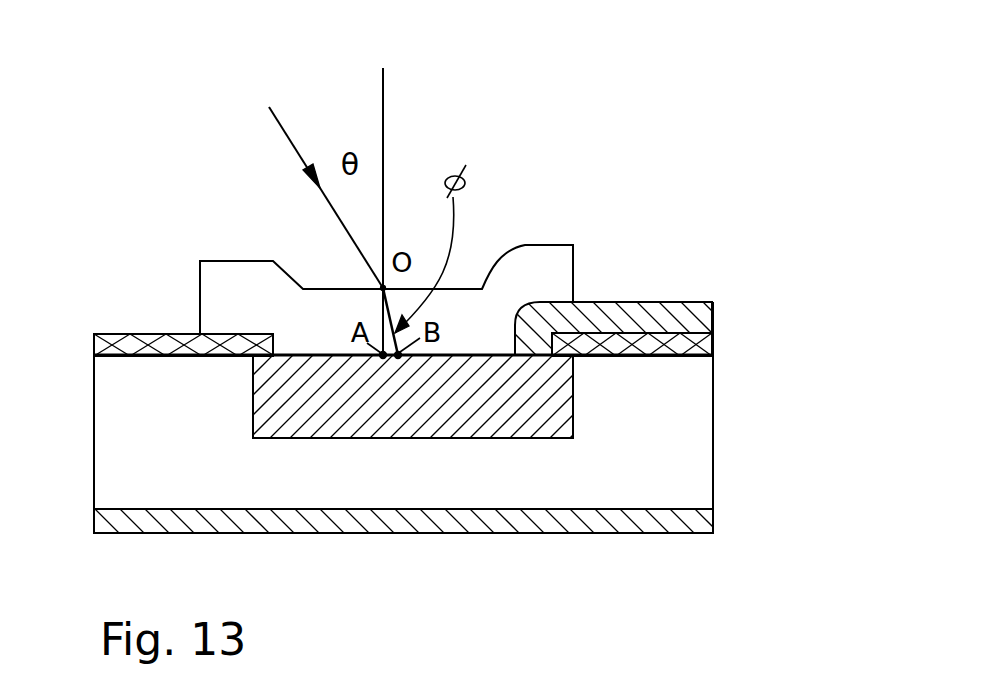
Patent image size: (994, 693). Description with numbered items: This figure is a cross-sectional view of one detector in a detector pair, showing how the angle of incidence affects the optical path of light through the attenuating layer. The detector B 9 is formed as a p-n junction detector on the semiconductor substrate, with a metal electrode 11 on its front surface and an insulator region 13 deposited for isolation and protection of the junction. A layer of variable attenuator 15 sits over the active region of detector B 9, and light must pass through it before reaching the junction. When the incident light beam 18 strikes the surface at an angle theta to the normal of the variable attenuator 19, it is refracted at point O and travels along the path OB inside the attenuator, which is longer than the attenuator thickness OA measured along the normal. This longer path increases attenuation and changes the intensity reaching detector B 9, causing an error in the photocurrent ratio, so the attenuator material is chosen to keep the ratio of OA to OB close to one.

The detector B 9 is at (530, 407).
The metal electrode 11 is at (717, 307).
The insulator region 13 is at (712, 337).
The variable attenuator 15 is at (557, 272).
The incident light beam 18 is at (308, 166).
The normal of the variable attenuator 19 is at (392, 180).